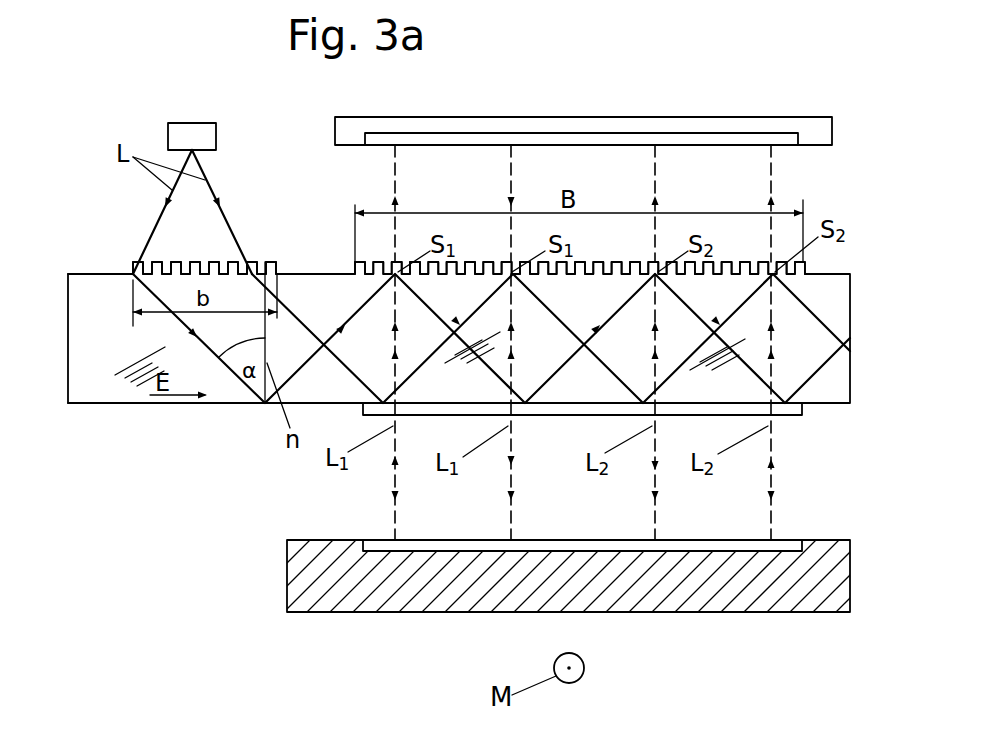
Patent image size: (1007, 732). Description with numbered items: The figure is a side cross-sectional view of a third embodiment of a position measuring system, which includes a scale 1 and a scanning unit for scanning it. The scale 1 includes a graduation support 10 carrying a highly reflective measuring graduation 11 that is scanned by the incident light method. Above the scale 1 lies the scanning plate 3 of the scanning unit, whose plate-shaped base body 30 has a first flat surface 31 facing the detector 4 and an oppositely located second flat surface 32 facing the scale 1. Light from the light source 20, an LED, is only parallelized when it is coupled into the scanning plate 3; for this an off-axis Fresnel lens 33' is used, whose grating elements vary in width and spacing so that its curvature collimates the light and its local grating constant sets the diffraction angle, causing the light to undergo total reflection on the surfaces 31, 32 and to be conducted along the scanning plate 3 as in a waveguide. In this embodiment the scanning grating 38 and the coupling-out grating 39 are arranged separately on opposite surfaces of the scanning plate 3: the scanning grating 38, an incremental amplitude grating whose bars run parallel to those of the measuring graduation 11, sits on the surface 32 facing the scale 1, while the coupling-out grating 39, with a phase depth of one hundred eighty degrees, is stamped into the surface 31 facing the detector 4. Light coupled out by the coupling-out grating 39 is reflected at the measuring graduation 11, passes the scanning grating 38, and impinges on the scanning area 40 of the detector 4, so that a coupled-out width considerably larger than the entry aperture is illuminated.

The scale 1 is at (855, 574).
The scanning plate 3 is at (851, 317).
The detector 4 is at (527, 117).
The graduation support 10 is at (640, 600).
The measuring graduation 11 is at (790, 540).
The light source 20 is at (207, 124).
The plate-shaped base body 30 is at (90, 362).
The first flat surface 31 is at (102, 273).
The second flat surface 32 is at (138, 404).
The off-axis Fresnel lens 33' is at (207, 234).
The scanning grating 38 is at (572, 416).
The coupling-out grating 39 is at (590, 272).
The scanning area 40 is at (596, 133).